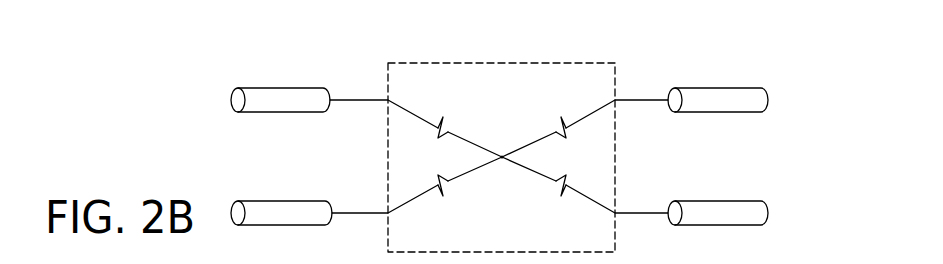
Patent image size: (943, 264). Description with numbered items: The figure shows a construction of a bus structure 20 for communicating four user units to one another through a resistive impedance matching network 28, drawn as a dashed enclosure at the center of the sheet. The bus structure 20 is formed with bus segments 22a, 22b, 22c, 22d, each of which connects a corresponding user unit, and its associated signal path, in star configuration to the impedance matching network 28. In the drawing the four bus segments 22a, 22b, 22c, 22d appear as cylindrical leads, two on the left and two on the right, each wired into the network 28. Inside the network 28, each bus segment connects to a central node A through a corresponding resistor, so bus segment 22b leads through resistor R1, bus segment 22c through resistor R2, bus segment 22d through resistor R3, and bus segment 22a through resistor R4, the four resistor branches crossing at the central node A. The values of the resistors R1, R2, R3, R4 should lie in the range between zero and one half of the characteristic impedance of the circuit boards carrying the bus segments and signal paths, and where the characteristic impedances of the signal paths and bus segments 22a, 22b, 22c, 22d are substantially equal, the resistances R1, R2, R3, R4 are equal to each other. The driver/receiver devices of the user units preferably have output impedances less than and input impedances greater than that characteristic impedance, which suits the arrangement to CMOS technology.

The bus structure 20 is at (727, 42).
The impedance matching network 28 is at (555, 62).
The bus segment 22a is at (285, 202).
The bus segment 22b is at (282, 88).
The bus segment 22c is at (705, 87).
The bus segment 22d is at (703, 202).
The resistor R1 is at (453, 111).
The resistor R2 is at (563, 111).
The resistor R3 is at (552, 204).
The resistor R4 is at (455, 204).
The central node A is at (502, 156).